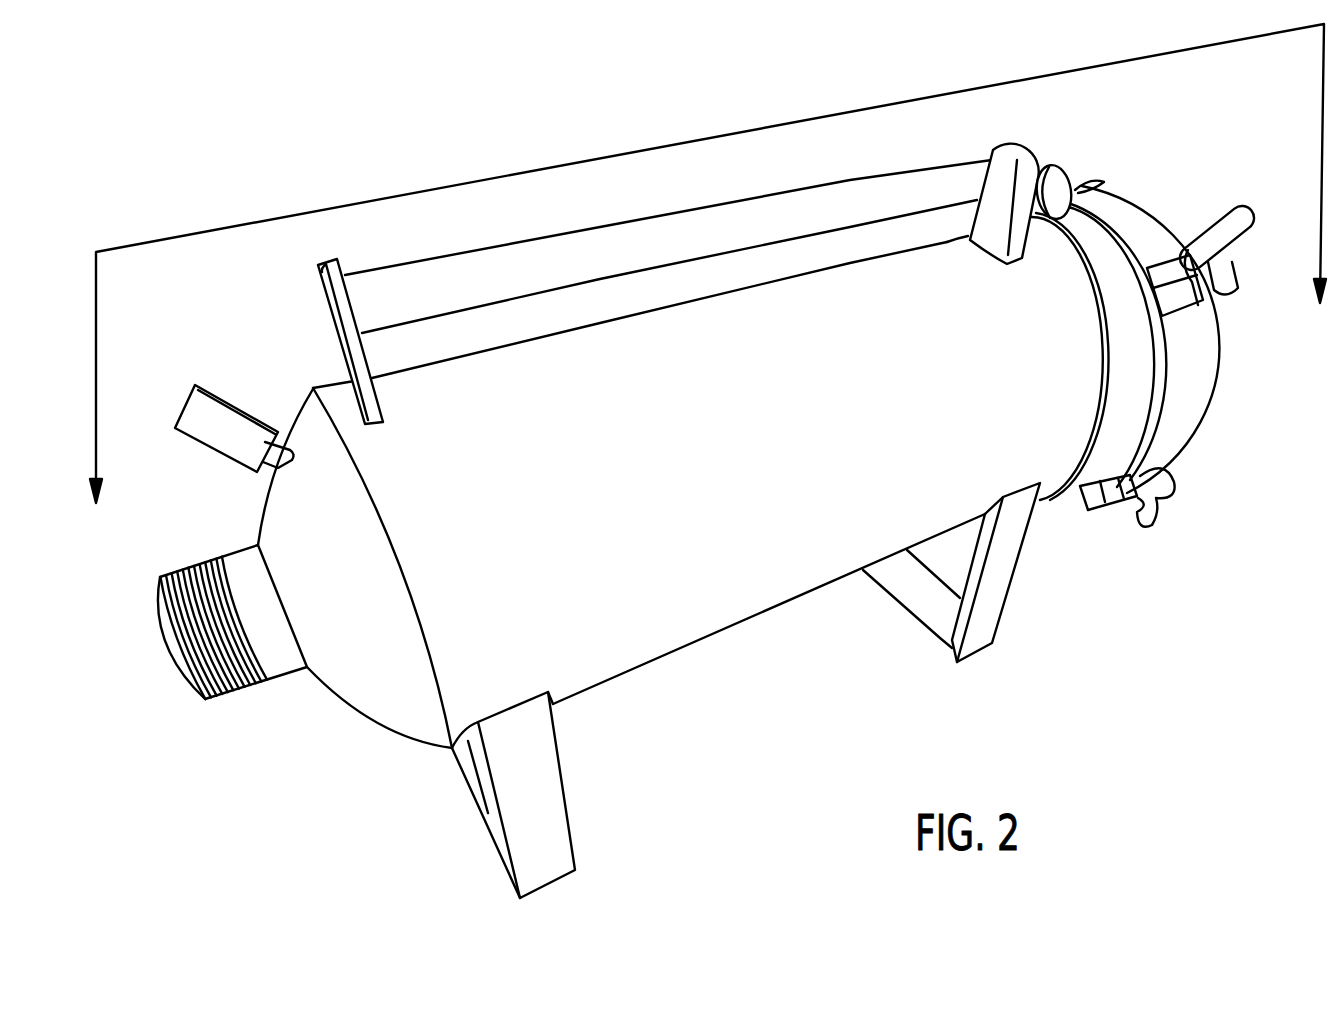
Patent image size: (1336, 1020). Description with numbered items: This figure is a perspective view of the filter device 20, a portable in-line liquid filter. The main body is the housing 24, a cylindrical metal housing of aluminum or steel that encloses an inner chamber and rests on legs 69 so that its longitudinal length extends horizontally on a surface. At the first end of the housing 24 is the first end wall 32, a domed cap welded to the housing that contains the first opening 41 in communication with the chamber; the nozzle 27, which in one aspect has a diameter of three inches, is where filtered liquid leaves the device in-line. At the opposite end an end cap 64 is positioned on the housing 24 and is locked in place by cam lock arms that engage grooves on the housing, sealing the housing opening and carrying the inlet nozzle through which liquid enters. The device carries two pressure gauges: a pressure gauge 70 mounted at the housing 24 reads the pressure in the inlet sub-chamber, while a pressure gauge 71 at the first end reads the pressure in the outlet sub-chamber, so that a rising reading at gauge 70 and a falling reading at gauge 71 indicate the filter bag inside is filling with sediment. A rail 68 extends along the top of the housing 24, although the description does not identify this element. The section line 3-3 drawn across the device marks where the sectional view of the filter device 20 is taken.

The filter device 20 is at (306, 164).
The housing 24 is at (868, 308).
The handle rail 68 is at (644, 235).
The pressure gauge 70 is at (1058, 172).
The end cap 64 is at (1155, 192).
The pressure gauge 71 is at (190, 413).
The nozzle 27 is at (194, 564).
The first opening 41 is at (167, 661).
The first end wall 32 is at (355, 688).
The legs 69 is at (553, 835).
The section line 3- 3 is at (703, 308).